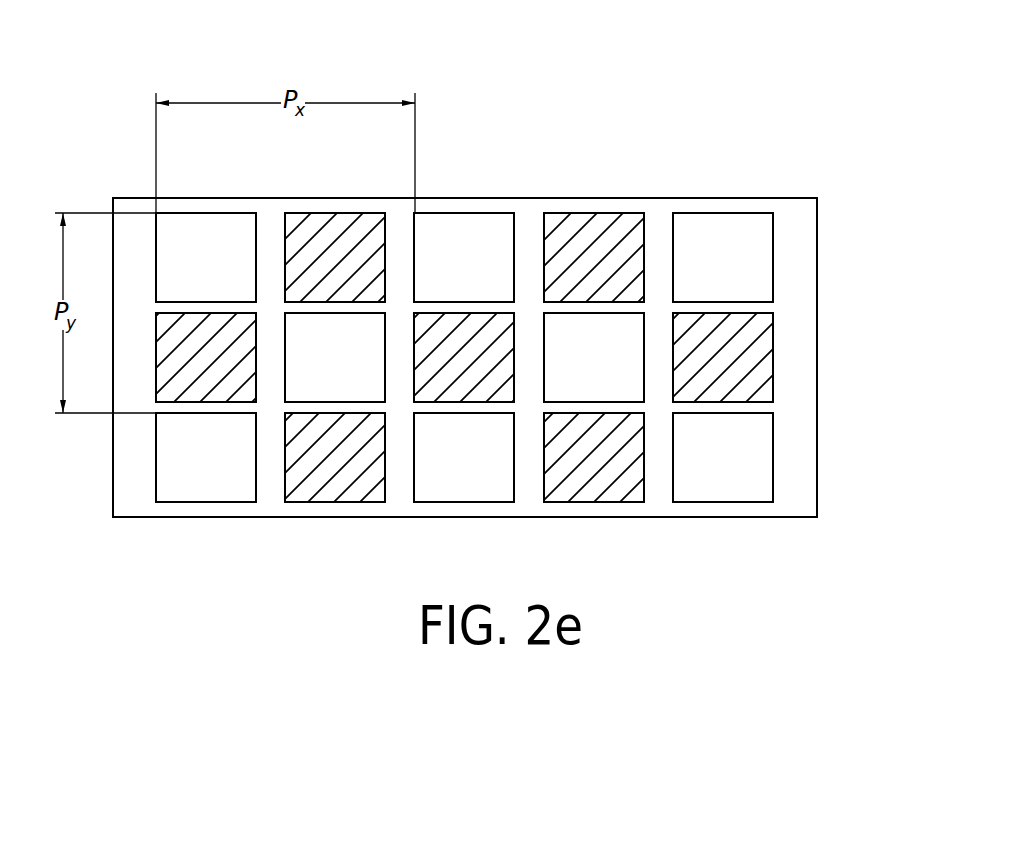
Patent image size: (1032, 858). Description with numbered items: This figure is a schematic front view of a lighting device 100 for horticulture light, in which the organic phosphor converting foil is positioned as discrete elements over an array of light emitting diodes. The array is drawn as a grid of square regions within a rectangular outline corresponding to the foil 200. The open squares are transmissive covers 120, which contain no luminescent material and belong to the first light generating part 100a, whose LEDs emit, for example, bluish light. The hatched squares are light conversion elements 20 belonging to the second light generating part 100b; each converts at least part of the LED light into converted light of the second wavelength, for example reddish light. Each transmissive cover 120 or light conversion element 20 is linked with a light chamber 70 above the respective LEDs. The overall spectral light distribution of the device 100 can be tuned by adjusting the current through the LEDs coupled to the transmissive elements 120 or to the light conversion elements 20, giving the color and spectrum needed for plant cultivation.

The lighting device 100 is at (516, 295).
The first light generating part 100a is at (185, 265).
The second light generating part 100b is at (313, 227).
The light conversion element 20 is at (367, 222).
The light chamber 70 is at (565, 233).
The transmissive cover 120 is at (742, 227).
The foil 200 is at (795, 258).